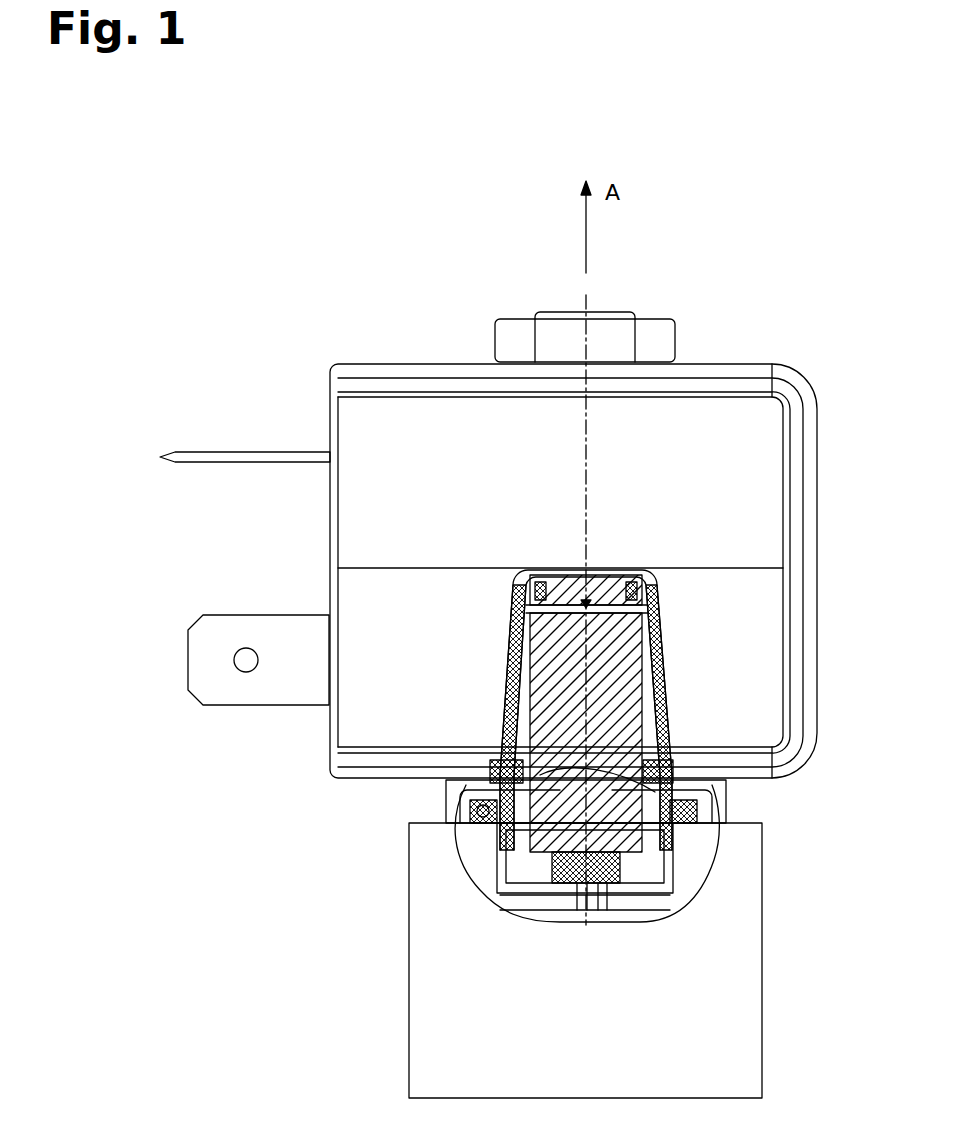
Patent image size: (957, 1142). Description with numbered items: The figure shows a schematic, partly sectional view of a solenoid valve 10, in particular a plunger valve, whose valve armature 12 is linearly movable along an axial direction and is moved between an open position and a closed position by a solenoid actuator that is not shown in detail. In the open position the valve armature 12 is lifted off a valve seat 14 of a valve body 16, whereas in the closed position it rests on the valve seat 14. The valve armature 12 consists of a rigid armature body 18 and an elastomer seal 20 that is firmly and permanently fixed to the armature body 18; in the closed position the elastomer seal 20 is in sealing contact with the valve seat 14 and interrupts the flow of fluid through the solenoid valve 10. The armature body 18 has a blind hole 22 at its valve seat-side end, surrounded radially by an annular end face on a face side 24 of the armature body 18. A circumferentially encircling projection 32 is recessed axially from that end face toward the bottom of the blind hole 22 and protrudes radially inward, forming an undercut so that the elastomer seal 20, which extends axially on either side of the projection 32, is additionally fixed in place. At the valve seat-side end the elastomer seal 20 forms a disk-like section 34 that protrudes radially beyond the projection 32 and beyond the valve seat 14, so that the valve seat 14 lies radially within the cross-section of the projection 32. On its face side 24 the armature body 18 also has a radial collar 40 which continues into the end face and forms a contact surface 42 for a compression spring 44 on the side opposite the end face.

The solenoid valve 10 is at (238, 339).
The valve armature 12 is at (507, 663).
The valve seat 14 is at (548, 955).
The valve body 16 is at (425, 1063).
The armature body 18 is at (655, 640).
The elastomer seal 20 is at (672, 862).
The blind hole 22 is at (505, 905).
The face side 24 is at (658, 950).
The circumferentially encircling projection 32 is at (617, 955).
The disk-like section 34 is at (566, 950).
The radial collar 40 is at (487, 864).
The contact surface 42 is at (655, 832).
The compression spring 44 is at (520, 845).